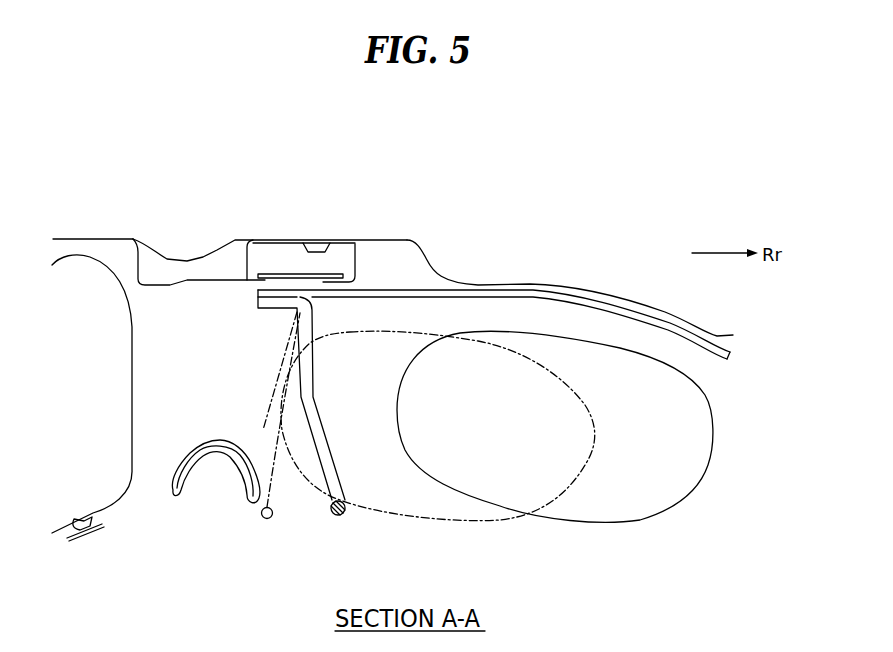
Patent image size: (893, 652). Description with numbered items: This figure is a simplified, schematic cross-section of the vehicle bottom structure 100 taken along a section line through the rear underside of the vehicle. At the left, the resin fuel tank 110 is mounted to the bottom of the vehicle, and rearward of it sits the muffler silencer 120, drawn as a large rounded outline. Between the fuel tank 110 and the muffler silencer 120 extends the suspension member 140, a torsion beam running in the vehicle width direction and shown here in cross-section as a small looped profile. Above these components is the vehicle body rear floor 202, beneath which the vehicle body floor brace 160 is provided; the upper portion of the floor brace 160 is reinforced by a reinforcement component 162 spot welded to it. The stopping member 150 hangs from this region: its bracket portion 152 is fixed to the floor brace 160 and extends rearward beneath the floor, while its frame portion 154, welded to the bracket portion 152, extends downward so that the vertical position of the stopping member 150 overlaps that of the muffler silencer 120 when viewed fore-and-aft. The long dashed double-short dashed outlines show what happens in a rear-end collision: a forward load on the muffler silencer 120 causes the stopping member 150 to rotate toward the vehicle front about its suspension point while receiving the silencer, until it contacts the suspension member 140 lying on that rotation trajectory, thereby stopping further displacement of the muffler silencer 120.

The vehicle bottom structure 100 is at (133, 188).
The fuel tank 110 is at (133, 317).
The muffler silencer 120 is at (702, 395).
The suspension member 140 is at (222, 438).
The stopping member 150 is at (322, 308).
The bracket portion 152 is at (346, 297).
The frame portion 154 is at (333, 516).
The vehicle body floor brace 160 is at (253, 284).
The reinforcement component 162 is at (270, 273).
The vehicle body rear floor 202 is at (410, 238).